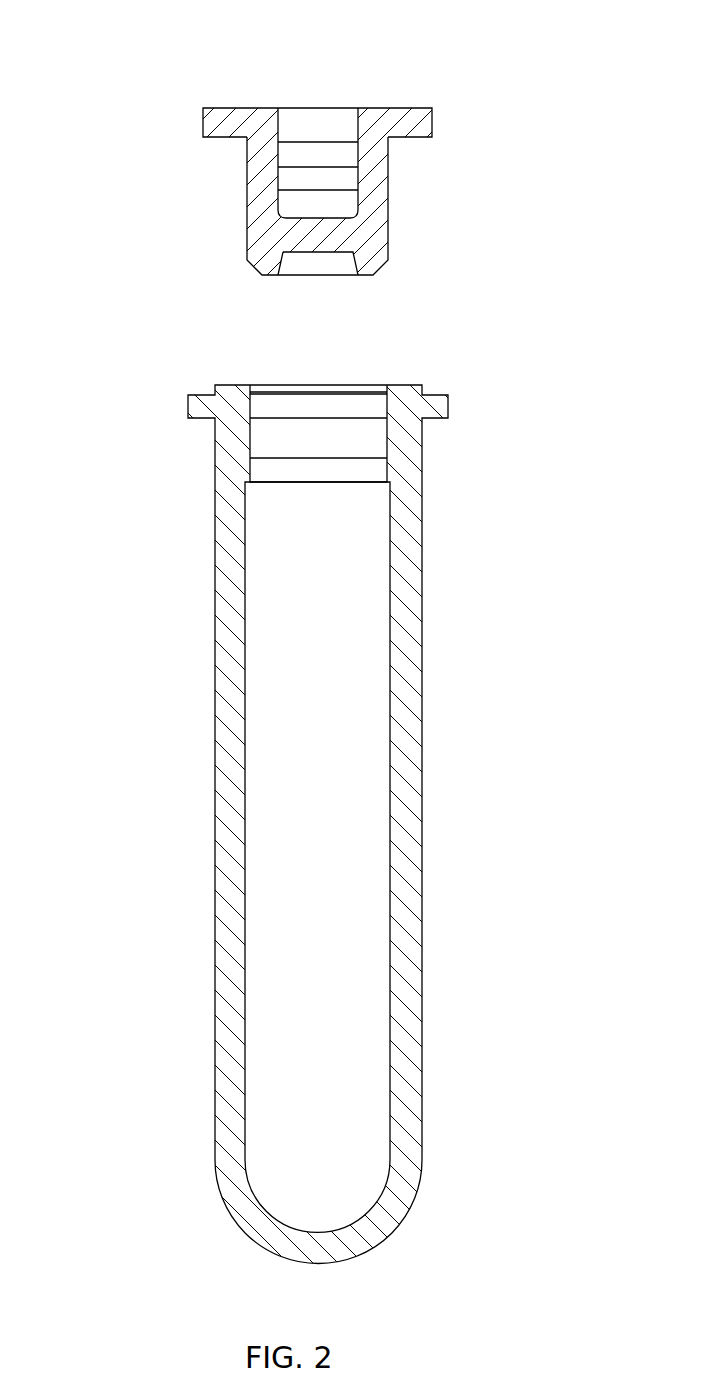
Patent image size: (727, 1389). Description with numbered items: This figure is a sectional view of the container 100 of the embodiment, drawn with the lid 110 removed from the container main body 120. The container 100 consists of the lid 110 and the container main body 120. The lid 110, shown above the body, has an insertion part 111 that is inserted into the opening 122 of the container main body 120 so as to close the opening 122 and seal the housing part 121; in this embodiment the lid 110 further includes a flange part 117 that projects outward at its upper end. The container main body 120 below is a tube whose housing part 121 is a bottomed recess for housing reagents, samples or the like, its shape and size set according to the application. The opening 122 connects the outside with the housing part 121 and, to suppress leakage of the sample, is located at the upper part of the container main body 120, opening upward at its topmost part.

The container 100 is at (602, 21).
The lid 110 is at (455, 201).
The insertion part 111 is at (250, 210).
The flange part 117 is at (215, 122).
The container main body 120 is at (483, 613).
The housing part 121 is at (270, 760).
The opening 122 is at (283, 408).